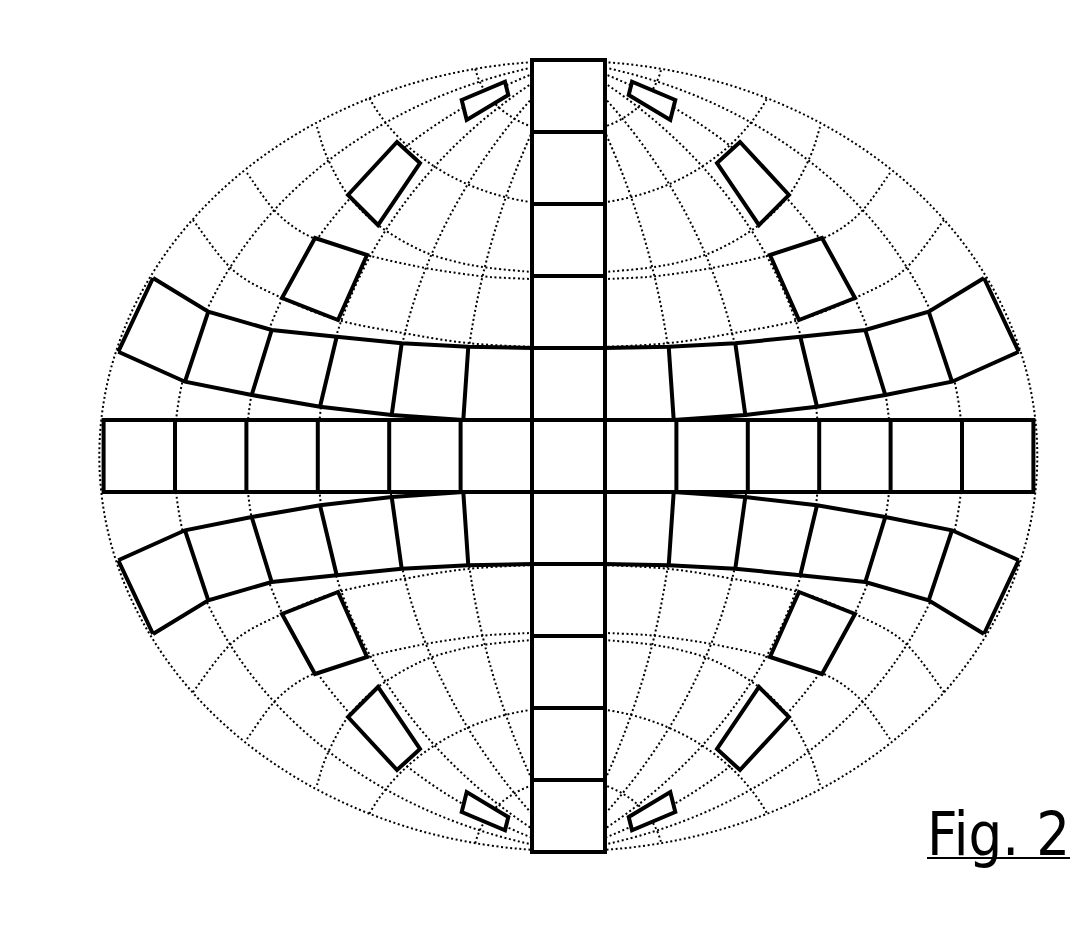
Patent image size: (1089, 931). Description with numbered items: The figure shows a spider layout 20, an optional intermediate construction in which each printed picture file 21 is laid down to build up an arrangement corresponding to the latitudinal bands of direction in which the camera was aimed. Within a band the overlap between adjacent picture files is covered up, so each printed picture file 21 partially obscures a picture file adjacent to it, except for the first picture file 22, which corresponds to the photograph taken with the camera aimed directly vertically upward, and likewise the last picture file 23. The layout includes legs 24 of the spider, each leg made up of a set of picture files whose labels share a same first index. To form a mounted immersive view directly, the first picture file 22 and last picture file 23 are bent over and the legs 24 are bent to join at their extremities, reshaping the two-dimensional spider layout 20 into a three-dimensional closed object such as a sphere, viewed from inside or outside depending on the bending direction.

The spider layout 20 is at (552, 459).
The printed picture file 21 is at (393, 203).
The first picture file 22 is at (550, 78).
The last picture file 23 is at (552, 837).
The legs 24 is at (985, 275).